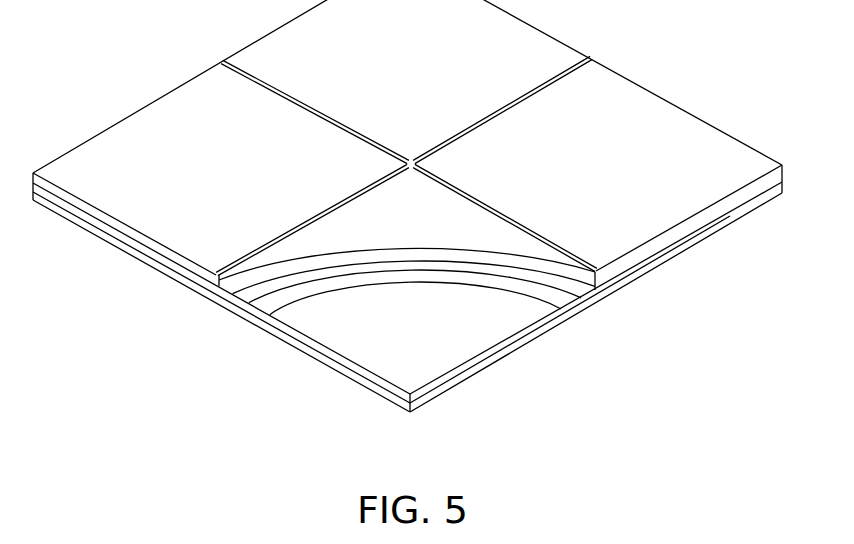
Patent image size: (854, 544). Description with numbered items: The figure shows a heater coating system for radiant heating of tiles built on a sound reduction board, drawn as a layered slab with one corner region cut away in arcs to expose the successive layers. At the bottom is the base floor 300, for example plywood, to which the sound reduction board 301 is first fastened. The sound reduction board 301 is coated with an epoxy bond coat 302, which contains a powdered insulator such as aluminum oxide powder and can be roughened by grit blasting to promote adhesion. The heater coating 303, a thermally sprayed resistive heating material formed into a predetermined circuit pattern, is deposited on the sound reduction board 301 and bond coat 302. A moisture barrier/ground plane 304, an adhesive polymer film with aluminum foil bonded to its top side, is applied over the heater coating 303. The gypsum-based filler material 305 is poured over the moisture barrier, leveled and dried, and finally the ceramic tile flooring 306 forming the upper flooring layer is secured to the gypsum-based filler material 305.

The base floor 300 is at (425, 401).
The sound reduction board 301 is at (440, 377).
The epoxy bond coat 302 is at (490, 335).
The heater coating 303 is at (517, 295).
The moisture barrier/ground plane 304 is at (552, 298).
The gypsum-based filler material 305 is at (248, 292).
The ceramic tile flooring 306 is at (135, 225).